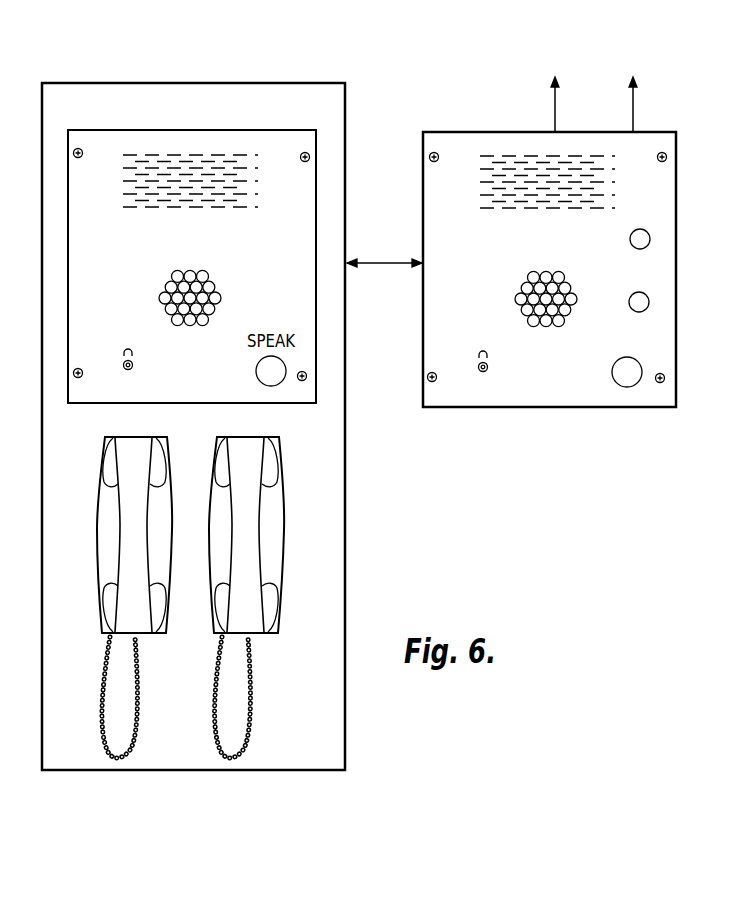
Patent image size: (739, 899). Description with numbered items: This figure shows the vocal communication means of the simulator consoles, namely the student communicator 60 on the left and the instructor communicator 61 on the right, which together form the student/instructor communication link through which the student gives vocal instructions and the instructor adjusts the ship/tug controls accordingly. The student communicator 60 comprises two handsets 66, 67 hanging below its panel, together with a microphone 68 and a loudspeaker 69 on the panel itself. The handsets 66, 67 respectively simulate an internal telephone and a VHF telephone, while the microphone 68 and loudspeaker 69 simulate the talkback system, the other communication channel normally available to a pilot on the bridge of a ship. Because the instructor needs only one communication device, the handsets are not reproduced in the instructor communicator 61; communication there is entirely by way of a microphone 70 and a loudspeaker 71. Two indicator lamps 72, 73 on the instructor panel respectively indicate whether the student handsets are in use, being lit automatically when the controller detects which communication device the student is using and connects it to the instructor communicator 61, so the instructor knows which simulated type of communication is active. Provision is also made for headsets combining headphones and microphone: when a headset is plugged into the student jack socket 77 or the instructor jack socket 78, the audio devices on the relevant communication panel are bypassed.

The student communicator 60 is at (345, 125).
The instructor communicator 61 is at (425, 198).
The handset 66 is at (102, 523).
The handset 67 is at (279, 534).
The microphone 68 is at (205, 291).
The loudspeaker 69 is at (216, 153).
The microphone 70 is at (528, 299).
The loudspeaker 71 is at (497, 157).
The indicator lamp 72 is at (630, 296).
The indicator lamp 73 is at (629, 238).
The student jack socket 77 is at (133, 366).
The instructor jack socket 78 is at (489, 368).